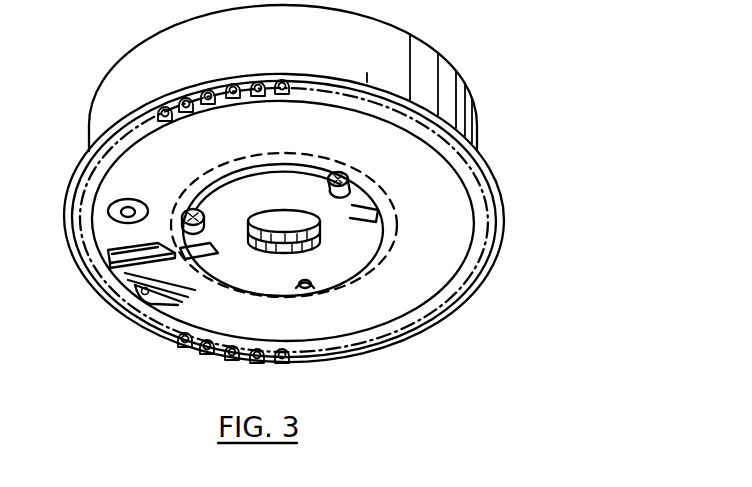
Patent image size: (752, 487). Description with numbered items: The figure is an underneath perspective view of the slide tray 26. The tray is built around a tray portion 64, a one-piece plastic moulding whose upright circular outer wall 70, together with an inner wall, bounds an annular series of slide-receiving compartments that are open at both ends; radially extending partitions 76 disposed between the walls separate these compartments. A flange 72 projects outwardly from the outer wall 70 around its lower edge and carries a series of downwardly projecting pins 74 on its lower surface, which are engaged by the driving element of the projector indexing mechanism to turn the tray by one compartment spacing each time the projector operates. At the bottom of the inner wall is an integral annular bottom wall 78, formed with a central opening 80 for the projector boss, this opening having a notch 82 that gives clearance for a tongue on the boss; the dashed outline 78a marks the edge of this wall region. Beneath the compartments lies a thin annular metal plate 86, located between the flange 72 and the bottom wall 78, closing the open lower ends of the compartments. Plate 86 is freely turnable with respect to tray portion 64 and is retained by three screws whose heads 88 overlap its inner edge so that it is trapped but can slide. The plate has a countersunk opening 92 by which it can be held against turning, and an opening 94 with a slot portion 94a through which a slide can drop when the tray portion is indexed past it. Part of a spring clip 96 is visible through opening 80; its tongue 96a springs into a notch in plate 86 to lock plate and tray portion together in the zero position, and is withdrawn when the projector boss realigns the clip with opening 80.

The slide tray 26 is at (485, 71).
The tray portion 64 is at (412, 50).
The outer wall 70 is at (472, 108).
The flange 72 is at (497, 237).
The pins 74 is at (232, 361).
The partitions 76 is at (196, 290).
The bottom wall 78 is at (283, 230).
The pad outline 78a is at (396, 240).
The central opening 80 is at (292, 253).
The notch 82 is at (320, 228).
The plate 86 is at (406, 298).
The screw heads 88 is at (338, 172).
The countersunk opening 92 is at (121, 212).
The opening 94 is at (150, 292).
The slot portion 94a is at (118, 276).
The spring clip 96 is at (284, 250).
The tongue 96a is at (228, 237).